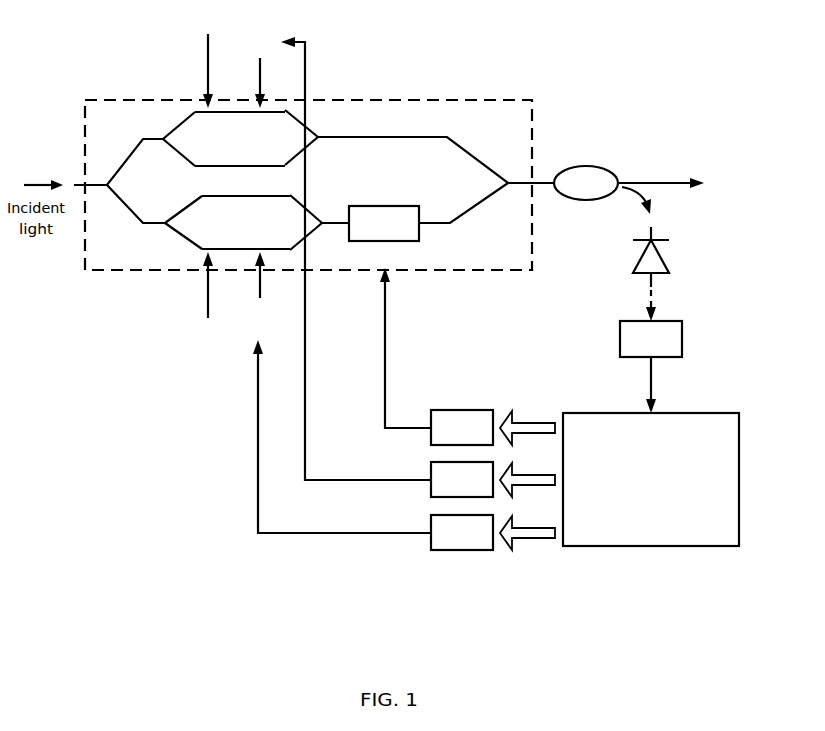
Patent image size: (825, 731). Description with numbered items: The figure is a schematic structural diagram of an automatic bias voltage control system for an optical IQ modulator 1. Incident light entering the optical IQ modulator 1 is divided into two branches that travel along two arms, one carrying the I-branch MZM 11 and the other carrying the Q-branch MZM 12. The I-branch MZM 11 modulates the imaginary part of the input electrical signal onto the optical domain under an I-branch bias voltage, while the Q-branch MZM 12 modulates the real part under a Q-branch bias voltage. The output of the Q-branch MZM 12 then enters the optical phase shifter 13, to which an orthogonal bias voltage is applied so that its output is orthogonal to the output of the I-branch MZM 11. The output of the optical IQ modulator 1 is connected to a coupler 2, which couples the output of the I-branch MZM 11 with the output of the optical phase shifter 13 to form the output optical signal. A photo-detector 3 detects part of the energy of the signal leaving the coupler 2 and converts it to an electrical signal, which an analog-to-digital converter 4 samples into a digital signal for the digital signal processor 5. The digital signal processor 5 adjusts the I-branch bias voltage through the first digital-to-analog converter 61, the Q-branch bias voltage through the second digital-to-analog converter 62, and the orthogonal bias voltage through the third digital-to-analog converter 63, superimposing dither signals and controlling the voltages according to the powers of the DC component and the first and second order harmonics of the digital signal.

The optical IQ modulator 1 is at (314, 180).
The I-branch MZM 11 is at (240, 139).
The Q-branch MZM 12 is at (246, 222).
The optical phase shifter 13 is at (384, 223).
The coupler 2 is at (666, 187).
The photo-detector 3 is at (660, 274).
The analog-to-digital converter 4 is at (651, 367).
The digital signal processor 5 is at (651, 479).
The first digital-to-analog converter 61 is at (418, 267).
The second digital-to-analog converter 62 is at (404, 445).
The third digital-to-analog converter 63 is at (467, 356).